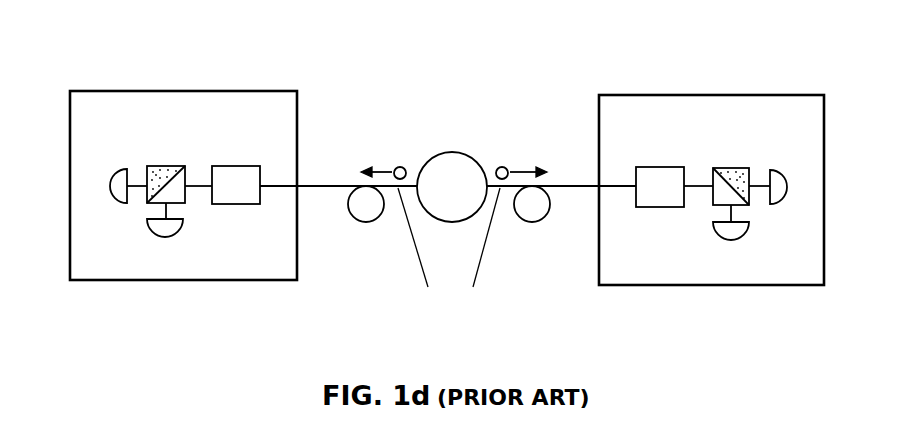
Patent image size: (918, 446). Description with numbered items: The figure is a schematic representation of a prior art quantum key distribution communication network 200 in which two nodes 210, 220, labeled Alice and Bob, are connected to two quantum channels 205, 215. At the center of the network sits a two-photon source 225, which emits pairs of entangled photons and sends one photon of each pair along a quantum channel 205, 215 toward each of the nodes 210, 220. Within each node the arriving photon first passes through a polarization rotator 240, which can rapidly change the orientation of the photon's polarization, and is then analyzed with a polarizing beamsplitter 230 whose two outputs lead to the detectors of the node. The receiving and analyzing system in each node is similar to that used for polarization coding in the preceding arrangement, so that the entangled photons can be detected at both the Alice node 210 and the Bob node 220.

The communication network 200 is at (447, 179).
The quantum channel 205 is at (324, 182).
The node 210 is at (189, 91).
The quantum channel 215 is at (573, 184).
The node 220 is at (693, 95).
The two-photon source 225 is at (452, 222).
The polarizing beamsplitter 230 is at (147, 166).
The polarization rotator 240 is at (260, 204).